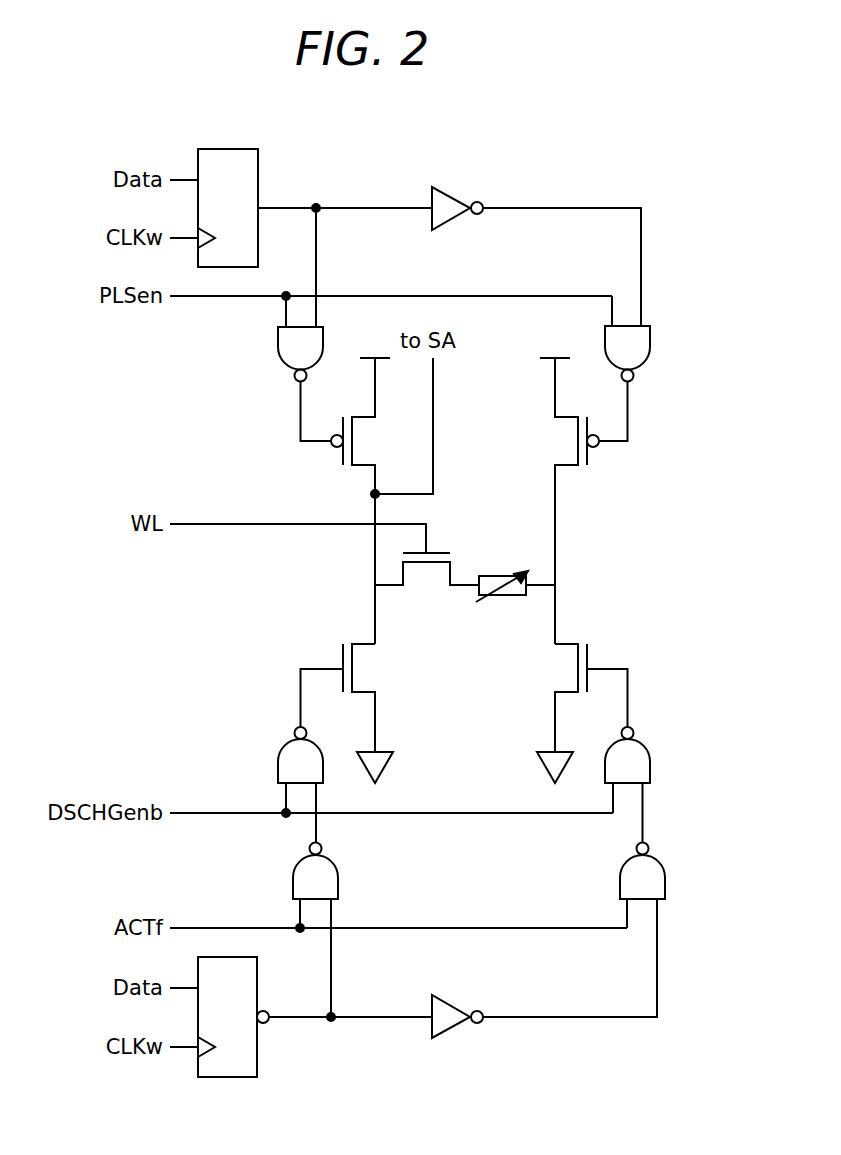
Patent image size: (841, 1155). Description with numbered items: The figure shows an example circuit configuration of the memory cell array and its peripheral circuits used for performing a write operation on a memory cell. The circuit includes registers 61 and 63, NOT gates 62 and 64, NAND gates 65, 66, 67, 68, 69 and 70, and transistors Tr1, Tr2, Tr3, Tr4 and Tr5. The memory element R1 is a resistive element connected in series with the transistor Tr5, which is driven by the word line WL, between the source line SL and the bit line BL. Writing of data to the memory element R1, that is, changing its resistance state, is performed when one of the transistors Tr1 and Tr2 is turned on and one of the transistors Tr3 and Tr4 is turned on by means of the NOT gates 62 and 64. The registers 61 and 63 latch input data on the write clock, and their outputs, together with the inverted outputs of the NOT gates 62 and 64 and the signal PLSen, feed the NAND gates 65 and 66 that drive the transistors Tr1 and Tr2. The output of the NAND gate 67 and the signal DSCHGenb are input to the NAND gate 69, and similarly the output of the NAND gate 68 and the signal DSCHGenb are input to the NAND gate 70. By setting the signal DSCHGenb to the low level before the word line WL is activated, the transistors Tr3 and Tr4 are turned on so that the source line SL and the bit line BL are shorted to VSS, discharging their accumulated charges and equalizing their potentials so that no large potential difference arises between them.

The register 61 is at (258, 175).
The NOT gate 62 is at (452, 192).
The register 63 is at (257, 1047).
The NOT gate 64 is at (450, 1028).
The NAND gate 65 is at (278, 347).
The NAND gate 66 is at (650, 347).
The NAND gate 67 is at (293, 877).
The NAND gate 68 is at (665, 877).
The NAND gate 69 is at (278, 760).
The NAND gate 70 is at (650, 762).
The transistor Tr1 is at (364, 426).
The transistor Tr2 is at (562, 501).
The transistor Tr3 is at (350, 713).
The transistor Tr4 is at (576, 713).
The transistor Tr5 is at (427, 584).
The memory element R1 is at (515, 599).